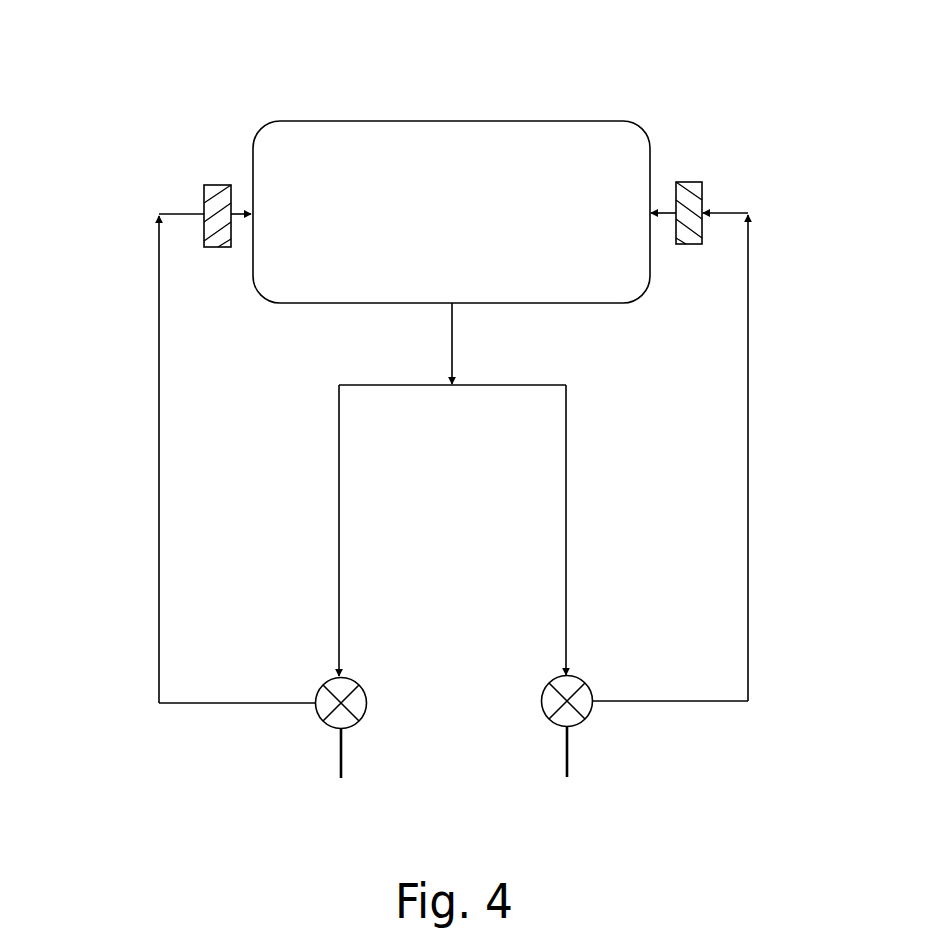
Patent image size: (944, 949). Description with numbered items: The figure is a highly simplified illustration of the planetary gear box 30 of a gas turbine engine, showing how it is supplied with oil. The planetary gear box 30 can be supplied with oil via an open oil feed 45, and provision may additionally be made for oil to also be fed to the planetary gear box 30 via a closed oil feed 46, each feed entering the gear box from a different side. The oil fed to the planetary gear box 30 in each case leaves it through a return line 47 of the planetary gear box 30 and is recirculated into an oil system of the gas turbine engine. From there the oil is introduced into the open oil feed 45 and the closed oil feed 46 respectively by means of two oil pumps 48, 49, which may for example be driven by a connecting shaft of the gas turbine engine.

The planetary gear box 30 is at (457, 117).
The open oil feed 45 is at (755, 432).
The closed oil feed 46 is at (139, 527).
The return line 47 is at (444, 333).
The oil pump 48 is at (590, 708).
The oil pump 49 is at (323, 709).